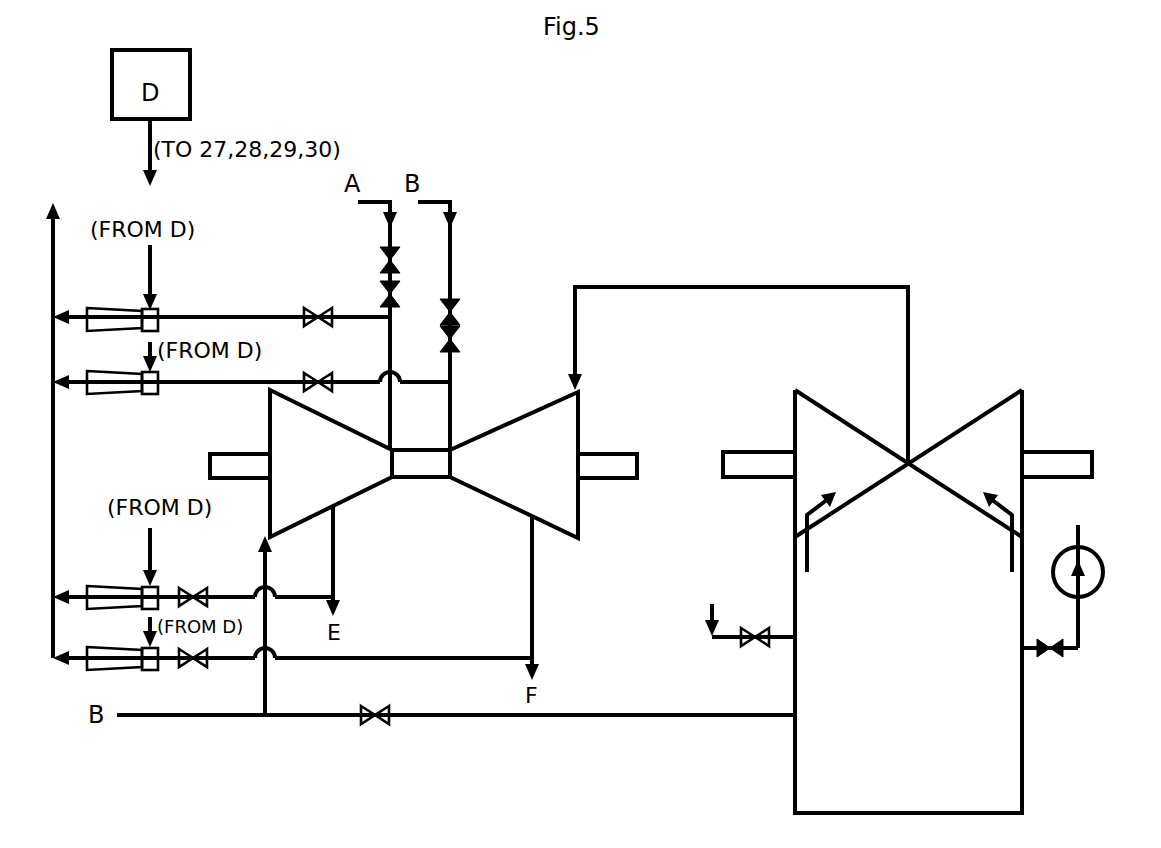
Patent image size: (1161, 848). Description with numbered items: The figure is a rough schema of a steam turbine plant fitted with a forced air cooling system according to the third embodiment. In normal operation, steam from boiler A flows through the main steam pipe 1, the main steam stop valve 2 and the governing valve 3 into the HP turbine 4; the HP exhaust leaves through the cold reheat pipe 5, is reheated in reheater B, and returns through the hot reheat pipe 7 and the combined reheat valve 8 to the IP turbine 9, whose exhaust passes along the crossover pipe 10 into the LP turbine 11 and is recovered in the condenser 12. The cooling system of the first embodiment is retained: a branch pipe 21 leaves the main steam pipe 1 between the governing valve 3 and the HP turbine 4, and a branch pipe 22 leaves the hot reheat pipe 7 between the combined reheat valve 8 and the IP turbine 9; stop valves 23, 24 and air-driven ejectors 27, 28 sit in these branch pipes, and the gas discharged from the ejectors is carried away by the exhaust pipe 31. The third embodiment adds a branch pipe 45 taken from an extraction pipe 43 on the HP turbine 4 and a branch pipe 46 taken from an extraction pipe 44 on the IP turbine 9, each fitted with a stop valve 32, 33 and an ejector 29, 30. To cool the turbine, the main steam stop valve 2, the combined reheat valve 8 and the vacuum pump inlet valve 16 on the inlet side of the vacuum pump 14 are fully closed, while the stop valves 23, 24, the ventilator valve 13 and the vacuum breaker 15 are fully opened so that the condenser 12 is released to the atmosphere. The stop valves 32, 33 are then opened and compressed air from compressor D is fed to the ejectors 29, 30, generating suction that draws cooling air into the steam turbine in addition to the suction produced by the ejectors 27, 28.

The main steam pipe 1 is at (386, 230).
The main steam stop valve 2 is at (382, 260).
The governing valve 3 is at (382, 296).
The HP turbine 4 is at (353, 498).
The cold reheat pipe 5 is at (268, 607).
The hot reheat pipe 7 is at (452, 268).
The combined reheat valve 8 is at (456, 326).
The IP turbine 9 is at (506, 510).
The crossover pipe 10 is at (661, 286).
The LP turbine 11 is at (838, 510).
The condenser 12 is at (1024, 708).
The ventilator valve 13 is at (388, 722).
The vacuum pump 14 is at (1099, 590).
The vacuum breaker 15 is at (756, 645).
The vacuum pump inlet valve 16 is at (1048, 656).
The branch pipe 21 is at (238, 299).
The branch pipe 22 is at (234, 392).
The stop valve 23 is at (303, 302).
The stop valve 24 is at (328, 372).
The ejector 27 is at (93, 304).
The ejector 28 is at (140, 398).
The ejector 29 is at (98, 584).
The ejector 30 is at (90, 673).
The exhaust pipe 31 is at (55, 500).
The stop valve 32 is at (190, 588).
The stop valve 33 is at (196, 668).
The extraction pipe 43 is at (336, 582).
The extraction pipe 44 is at (534, 626).
The branch pipe 45 is at (325, 558).
The branch pipe 46 is at (398, 656).